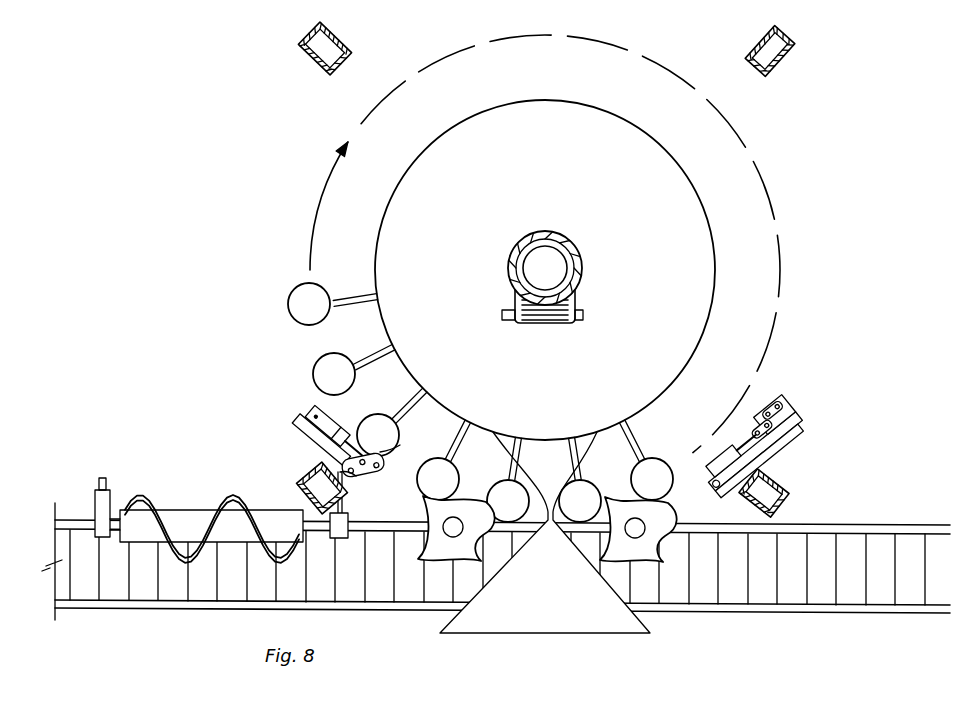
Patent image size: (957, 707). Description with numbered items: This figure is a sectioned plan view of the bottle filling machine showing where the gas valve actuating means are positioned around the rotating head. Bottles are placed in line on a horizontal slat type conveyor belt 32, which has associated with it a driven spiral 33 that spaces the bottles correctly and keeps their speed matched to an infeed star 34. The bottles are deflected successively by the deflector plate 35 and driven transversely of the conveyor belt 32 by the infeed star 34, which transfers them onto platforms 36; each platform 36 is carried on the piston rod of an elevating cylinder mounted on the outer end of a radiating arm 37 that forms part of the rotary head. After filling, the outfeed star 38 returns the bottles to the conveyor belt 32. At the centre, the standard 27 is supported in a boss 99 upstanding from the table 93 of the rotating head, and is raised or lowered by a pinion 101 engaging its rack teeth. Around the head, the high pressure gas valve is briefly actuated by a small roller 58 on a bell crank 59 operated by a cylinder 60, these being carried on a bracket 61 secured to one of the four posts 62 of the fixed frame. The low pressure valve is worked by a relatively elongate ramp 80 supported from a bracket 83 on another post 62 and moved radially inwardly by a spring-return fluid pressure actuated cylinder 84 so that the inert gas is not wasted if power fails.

The standard 27 is at (575, 252).
The conveyor belt 32 is at (790, 595).
The spiral 33 is at (152, 496).
The infeed star 34 is at (428, 553).
The deflector plate 35 is at (595, 576).
The platforms 36 is at (320, 360).
The radiating arm 37 is at (376, 350).
The outfeed star 38 is at (662, 518).
The roller 58 is at (400, 453).
The bell crank 59 is at (362, 476).
The cylinder 60 is at (298, 425).
The bracket 61 is at (347, 440).
The posts 62 is at (305, 45).
The elongate ramp 80 is at (790, 395).
The bracket 83 is at (782, 446).
The fluid pressure actuated cylinder 84 is at (726, 458).
The table 93 is at (637, 347).
The boss 99 is at (548, 237).
The pinion 101 is at (540, 322).